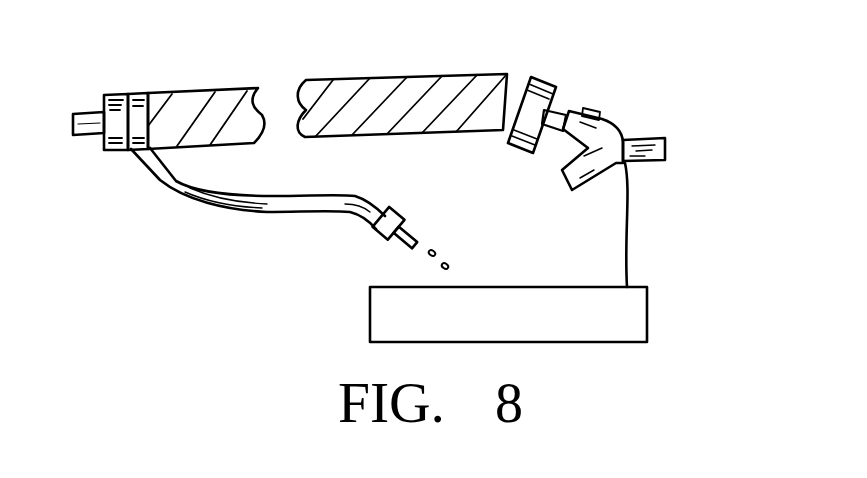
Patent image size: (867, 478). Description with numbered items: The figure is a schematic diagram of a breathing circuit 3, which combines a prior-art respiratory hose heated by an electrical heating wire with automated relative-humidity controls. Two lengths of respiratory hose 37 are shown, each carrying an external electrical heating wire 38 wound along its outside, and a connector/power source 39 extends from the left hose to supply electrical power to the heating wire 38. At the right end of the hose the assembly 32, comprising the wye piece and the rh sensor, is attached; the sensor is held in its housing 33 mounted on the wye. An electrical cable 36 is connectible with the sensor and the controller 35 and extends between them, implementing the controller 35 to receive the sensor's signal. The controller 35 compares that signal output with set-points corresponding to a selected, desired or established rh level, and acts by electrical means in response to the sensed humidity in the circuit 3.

The breathing circuit comprising automated rh controls and an electrical heating wir 3 is at (147, 259).
The assembly comprising wye and sensor 32 is at (665, 147).
The housing for sensor 33 is at (600, 110).
The controller 35 is at (378, 315).
The electrical cable 36 is at (628, 227).
The respiratory hose 37 is at (204, 92).
The external electrical heating wire on hose 38 is at (388, 79).
The connector/power source for wire 39 is at (167, 186).